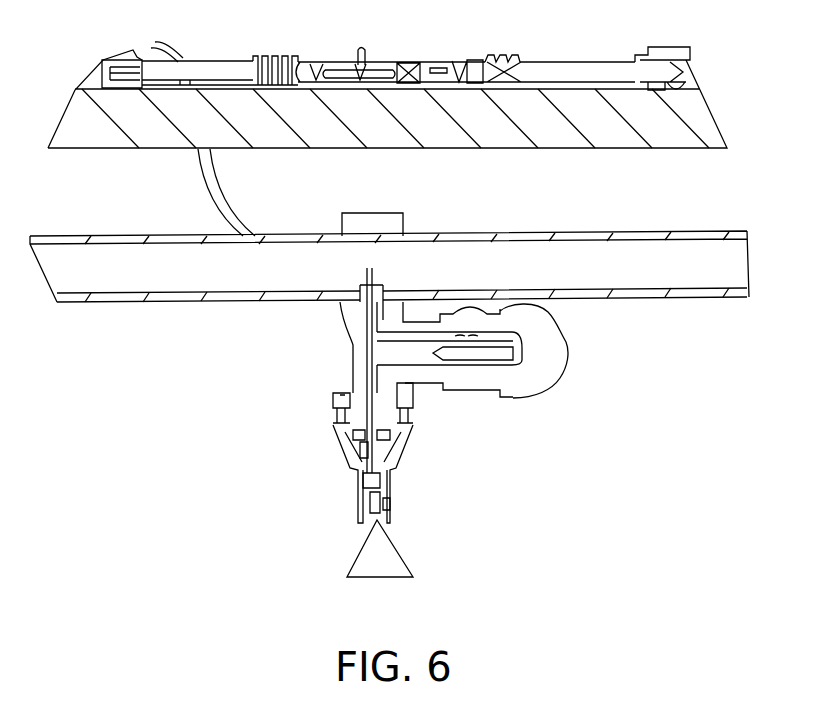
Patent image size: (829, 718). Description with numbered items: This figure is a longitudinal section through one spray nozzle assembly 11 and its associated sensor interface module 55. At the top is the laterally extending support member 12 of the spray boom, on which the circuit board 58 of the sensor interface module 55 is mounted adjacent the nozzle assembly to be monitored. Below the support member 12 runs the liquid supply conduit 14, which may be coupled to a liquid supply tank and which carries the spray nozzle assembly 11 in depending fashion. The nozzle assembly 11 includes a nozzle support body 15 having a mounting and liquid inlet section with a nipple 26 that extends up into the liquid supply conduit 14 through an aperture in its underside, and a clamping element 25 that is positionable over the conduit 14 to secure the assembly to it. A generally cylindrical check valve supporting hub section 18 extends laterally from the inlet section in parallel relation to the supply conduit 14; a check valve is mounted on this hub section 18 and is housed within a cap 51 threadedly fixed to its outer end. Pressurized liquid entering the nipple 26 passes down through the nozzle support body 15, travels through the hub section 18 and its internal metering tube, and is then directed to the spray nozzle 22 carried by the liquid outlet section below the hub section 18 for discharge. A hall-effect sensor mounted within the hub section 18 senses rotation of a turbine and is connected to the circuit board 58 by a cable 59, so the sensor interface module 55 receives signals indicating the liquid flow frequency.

The spray nozzle assembly 11 is at (333, 413).
The support member 12 is at (705, 88).
The liquid supply conduit 14 is at (705, 232).
The nozzle support body 15 is at (348, 332).
The check valve supporting hub section 18 is at (463, 388).
The spray nozzle 22 is at (353, 452).
The clamping element 25 is at (370, 213).
The nipple 26 is at (385, 285).
The cap 51 is at (543, 393).
The sensor interface module 55 is at (318, 58).
The circuit board 58 is at (474, 58).
The cable 59 is at (203, 175).